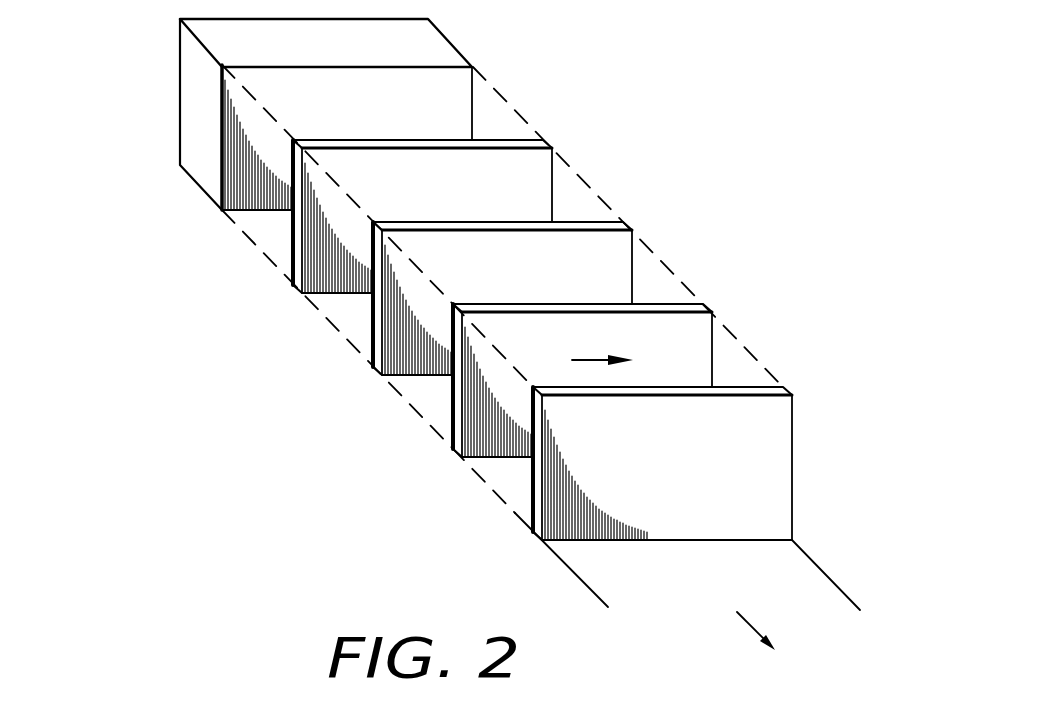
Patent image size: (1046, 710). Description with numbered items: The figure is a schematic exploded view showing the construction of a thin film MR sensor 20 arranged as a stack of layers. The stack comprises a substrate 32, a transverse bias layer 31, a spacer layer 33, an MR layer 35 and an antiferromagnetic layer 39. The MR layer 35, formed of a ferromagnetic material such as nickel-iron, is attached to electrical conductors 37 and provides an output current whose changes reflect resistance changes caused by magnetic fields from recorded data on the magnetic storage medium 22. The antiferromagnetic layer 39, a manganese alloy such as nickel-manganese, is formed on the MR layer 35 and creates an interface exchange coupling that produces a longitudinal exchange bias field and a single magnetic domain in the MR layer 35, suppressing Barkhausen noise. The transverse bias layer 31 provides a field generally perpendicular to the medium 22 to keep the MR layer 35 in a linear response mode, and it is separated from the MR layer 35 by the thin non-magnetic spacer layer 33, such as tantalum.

The magnetoresistive sensor 20 is at (224, 319).
The magnetic storage medium 22 is at (817, 592).
The transverse bias layer 31 is at (527, 138).
The substrate 32 is at (447, 53).
The spacer layer 33 is at (598, 220).
The MR layer 35 is at (668, 300).
The electrical conductors 37 is at (714, 355).
The antiferromagnetic layer 39 is at (787, 463).